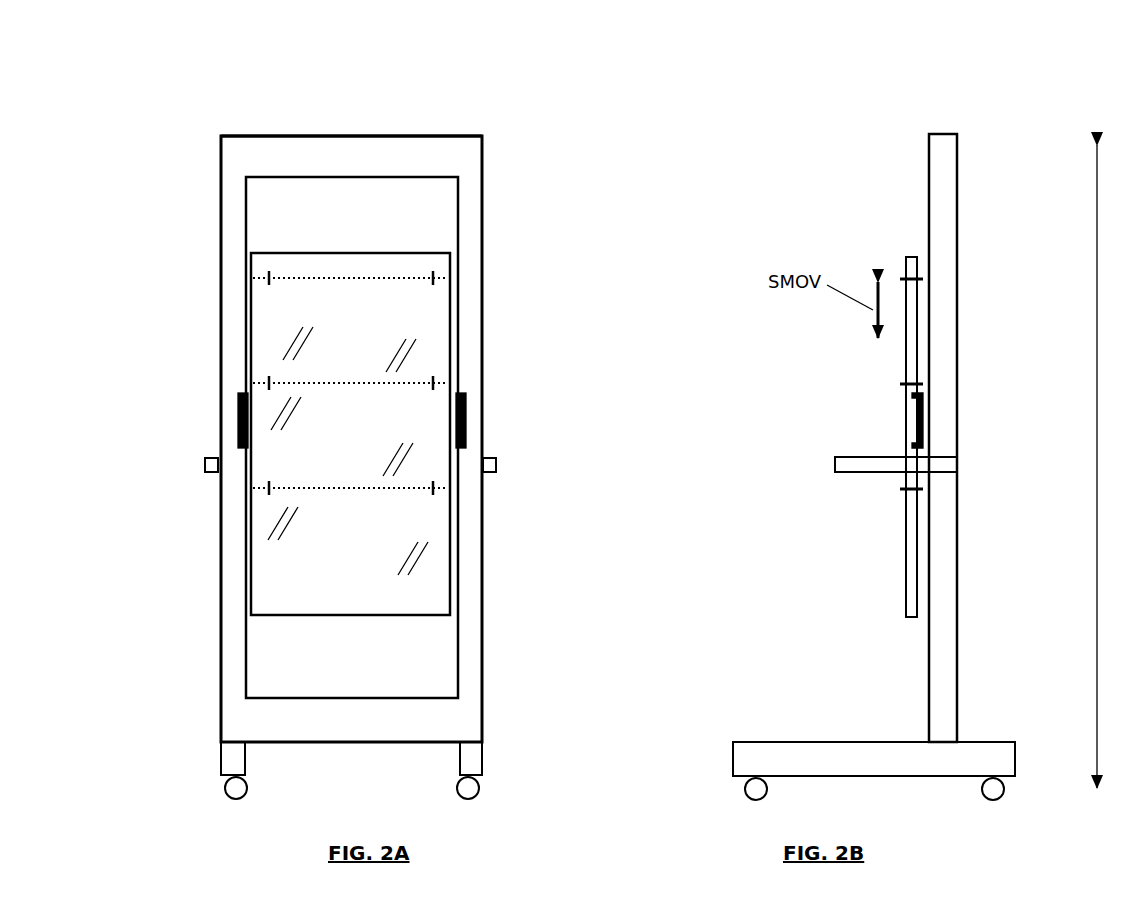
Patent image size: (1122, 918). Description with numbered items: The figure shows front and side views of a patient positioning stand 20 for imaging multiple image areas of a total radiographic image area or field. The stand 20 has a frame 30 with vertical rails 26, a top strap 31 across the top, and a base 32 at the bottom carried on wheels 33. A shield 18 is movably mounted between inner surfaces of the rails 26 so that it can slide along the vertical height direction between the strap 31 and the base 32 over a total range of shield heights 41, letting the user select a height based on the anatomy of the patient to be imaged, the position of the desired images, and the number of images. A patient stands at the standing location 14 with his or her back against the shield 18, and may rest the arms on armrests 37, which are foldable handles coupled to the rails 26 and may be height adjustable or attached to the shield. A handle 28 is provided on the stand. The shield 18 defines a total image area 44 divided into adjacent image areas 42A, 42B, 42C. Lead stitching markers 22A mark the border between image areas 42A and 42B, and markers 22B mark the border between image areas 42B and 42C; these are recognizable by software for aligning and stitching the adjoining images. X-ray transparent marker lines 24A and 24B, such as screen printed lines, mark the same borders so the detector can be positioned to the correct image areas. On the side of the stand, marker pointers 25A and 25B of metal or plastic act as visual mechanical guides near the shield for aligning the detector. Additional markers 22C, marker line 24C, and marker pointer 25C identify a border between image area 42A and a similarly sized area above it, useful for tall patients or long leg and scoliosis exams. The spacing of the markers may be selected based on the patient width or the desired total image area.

In FIG. 2A, the standing location 14 is at (387, 795).
In FIG. 2B, the standing location 14 is at (801, 796).
In FIG. 2A, the shield 18 is at (278, 320).
In FIG. 2B, the stand 20 is at (988, 133).
In FIG. 2A, the markers 22A is at (477, 328).
In FIG. 2A, the markers 22B is at (261, 585).
In FIG. 2A, the markers 22C is at (477, 256).
In FIG. 2A, the marker line 24A is at (328, 382).
In FIG. 2A, the marker line 24B is at (328, 487).
In FIG. 2A, the marker line 24C is at (353, 277).
In FIG. 2B, the marker pointer 25A is at (900, 384).
In FIG. 2B, the marker pointer 25B is at (902, 489).
In FIG. 2B, the marker pointer 25C is at (900, 280).
In FIG. 2A, the rails 26 is at (434, 437).
In FIG. 2B, the rails 26 is at (955, 535).
In FIG. 2A, the handle 28 is at (240, 435).
In FIG. 2B, the handle 28 is at (923, 405).
In FIG. 2A, the frame 30 is at (485, 151).
In FIG. 2B, the frame 30 is at (926, 166).
In FIG. 2A, the top strap 31 is at (268, 152).
In FIG. 2A, the base 32 is at (482, 762).
In FIG. 2B, the base 32 is at (732, 758).
In FIG. 2A, the wheels 33 is at (225, 785).
In FIG. 2B, the wheels 33 is at (987, 797).
In FIG. 2A, the armrests 37 is at (208, 472).
In FIG. 2B, the armrests 37 is at (833, 462).
In FIG. 2B, the total range of shield heights 41 is at (1095, 285).
In FIG. 2A, the image area 42A is at (349, 336).
In FIG. 2A, the image area 42B is at (342, 436).
In FIG. 2A, the image area 42C is at (348, 541).
In FIG. 2A, the total image area 44 is at (425, 517).